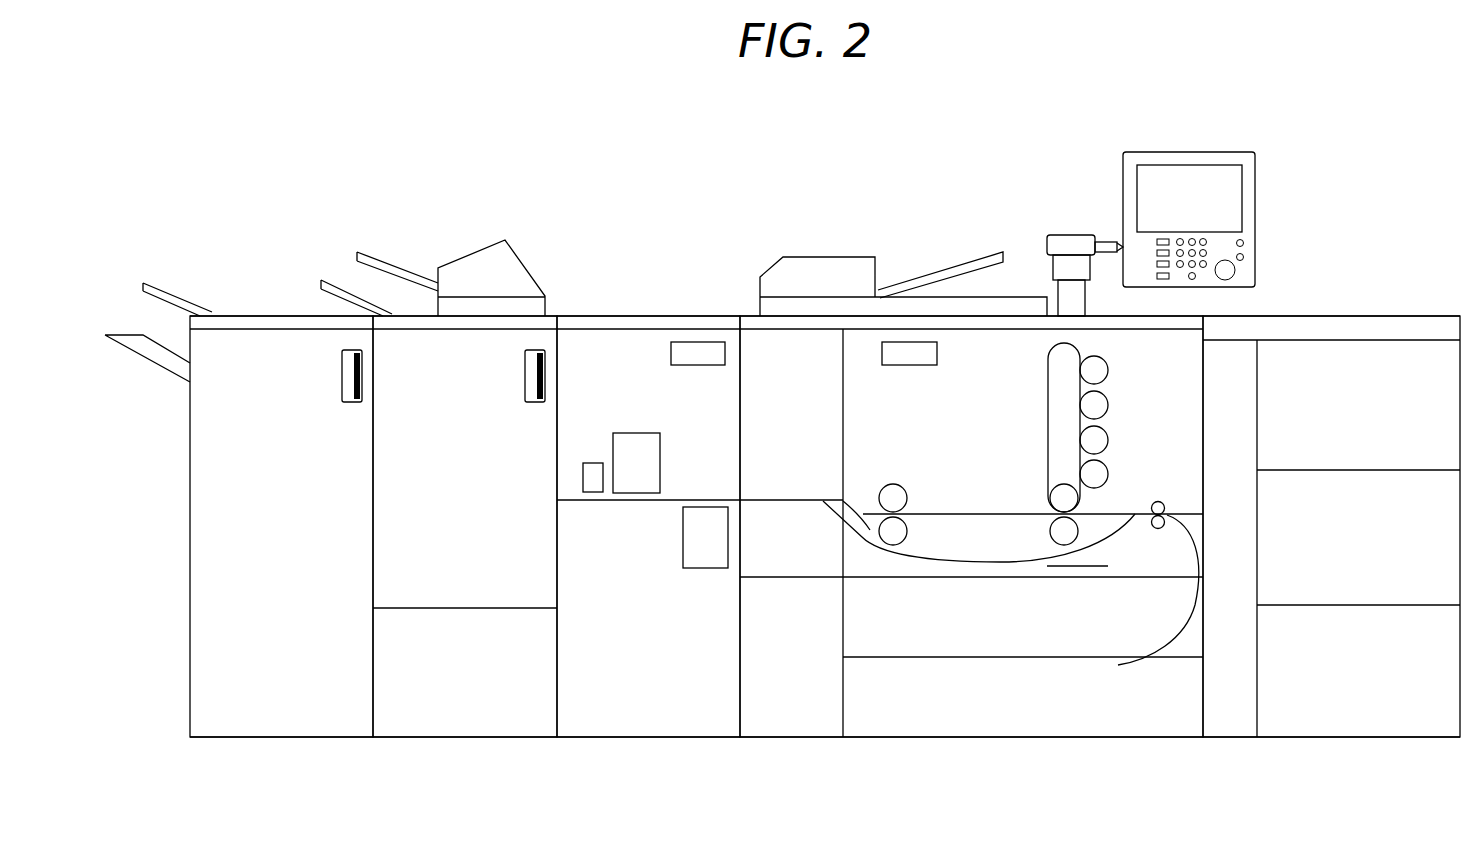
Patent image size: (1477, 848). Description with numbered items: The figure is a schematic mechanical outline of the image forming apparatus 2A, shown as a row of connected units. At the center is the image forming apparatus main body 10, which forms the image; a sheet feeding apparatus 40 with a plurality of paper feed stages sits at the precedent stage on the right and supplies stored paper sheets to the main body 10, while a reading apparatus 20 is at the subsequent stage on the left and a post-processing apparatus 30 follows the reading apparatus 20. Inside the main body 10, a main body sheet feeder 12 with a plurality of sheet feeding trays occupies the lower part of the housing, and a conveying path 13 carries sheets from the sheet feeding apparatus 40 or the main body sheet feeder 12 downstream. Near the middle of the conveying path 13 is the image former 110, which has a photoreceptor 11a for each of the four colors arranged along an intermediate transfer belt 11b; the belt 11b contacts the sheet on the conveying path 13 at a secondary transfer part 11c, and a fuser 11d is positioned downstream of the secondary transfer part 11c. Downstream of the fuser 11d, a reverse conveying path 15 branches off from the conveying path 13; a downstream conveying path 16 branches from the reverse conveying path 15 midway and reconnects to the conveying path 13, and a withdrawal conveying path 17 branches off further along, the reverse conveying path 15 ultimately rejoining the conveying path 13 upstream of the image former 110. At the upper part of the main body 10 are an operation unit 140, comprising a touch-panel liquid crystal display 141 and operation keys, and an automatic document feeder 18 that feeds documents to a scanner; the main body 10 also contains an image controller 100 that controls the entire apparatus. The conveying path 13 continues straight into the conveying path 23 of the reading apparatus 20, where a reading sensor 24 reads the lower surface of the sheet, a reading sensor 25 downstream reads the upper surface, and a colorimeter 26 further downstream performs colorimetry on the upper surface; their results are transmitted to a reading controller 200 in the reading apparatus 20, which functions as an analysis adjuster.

The image forming apparatus 2A is at (894, 124).
The image forming apparatus main body 10 is at (1023, 738).
The main body sheet feeder 12 is at (910, 708).
The conveying path 13 is at (1140, 512).
The reverse conveying path 15 is at (860, 500).
The downstream conveying path 16 is at (830, 512).
The withdrawal conveying path 17 is at (1080, 568).
The automatic document feeder 18 is at (833, 257).
The reading apparatus 20 is at (647, 738).
The conveying path 23 is at (634, 502).
The reading sensor 24 is at (703, 569).
The reading sensor 25 is at (648, 433).
The colorimeter 26 is at (591, 463).
The post-processing apparatus 30 is at (408, 738).
The sheet feeding apparatus 40 is at (1358, 738).
The image controller 100 is at (905, 341).
The image former 110 is at (1025, 424).
The photoreceptor 11a is at (1113, 392).
The intermediate transfer belt 11b is at (1048, 366).
The secondary transfer part 11c is at (1064, 531).
The fuser 11d is at (893, 498).
The operation unit 140 is at (1187, 132).
The liquid crystal display 141 is at (1205, 200).
The reading controller 200 is at (695, 341).